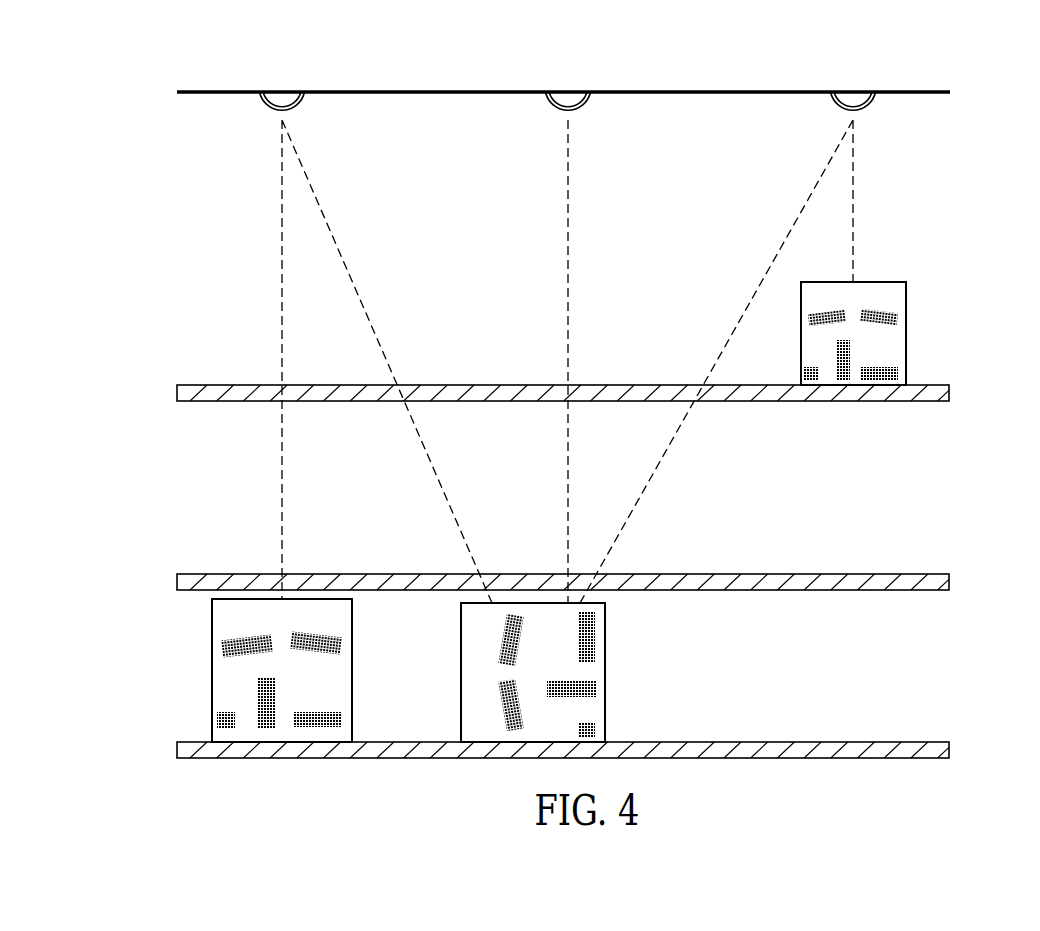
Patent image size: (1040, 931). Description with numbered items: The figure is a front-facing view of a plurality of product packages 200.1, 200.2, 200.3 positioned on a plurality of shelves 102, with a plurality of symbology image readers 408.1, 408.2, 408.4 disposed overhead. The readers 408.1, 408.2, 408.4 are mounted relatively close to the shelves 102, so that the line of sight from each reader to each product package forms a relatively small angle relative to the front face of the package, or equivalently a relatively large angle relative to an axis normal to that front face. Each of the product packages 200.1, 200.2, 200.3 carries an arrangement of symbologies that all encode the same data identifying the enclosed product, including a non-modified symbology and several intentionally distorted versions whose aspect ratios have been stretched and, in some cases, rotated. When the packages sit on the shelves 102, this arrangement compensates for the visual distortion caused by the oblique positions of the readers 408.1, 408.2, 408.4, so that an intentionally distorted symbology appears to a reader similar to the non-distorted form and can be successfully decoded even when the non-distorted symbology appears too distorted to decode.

The symbology image reader 408.1 is at (282, 102).
The symbology image reader 408.2 is at (568, 102).
The sensor / camera 408.4 is at (854, 102).
The shelf 102 is at (177, 391).
The product package 200.1 is at (212, 672).
The product package 200.2 is at (605, 670).
The product package 200.3 is at (906, 340).